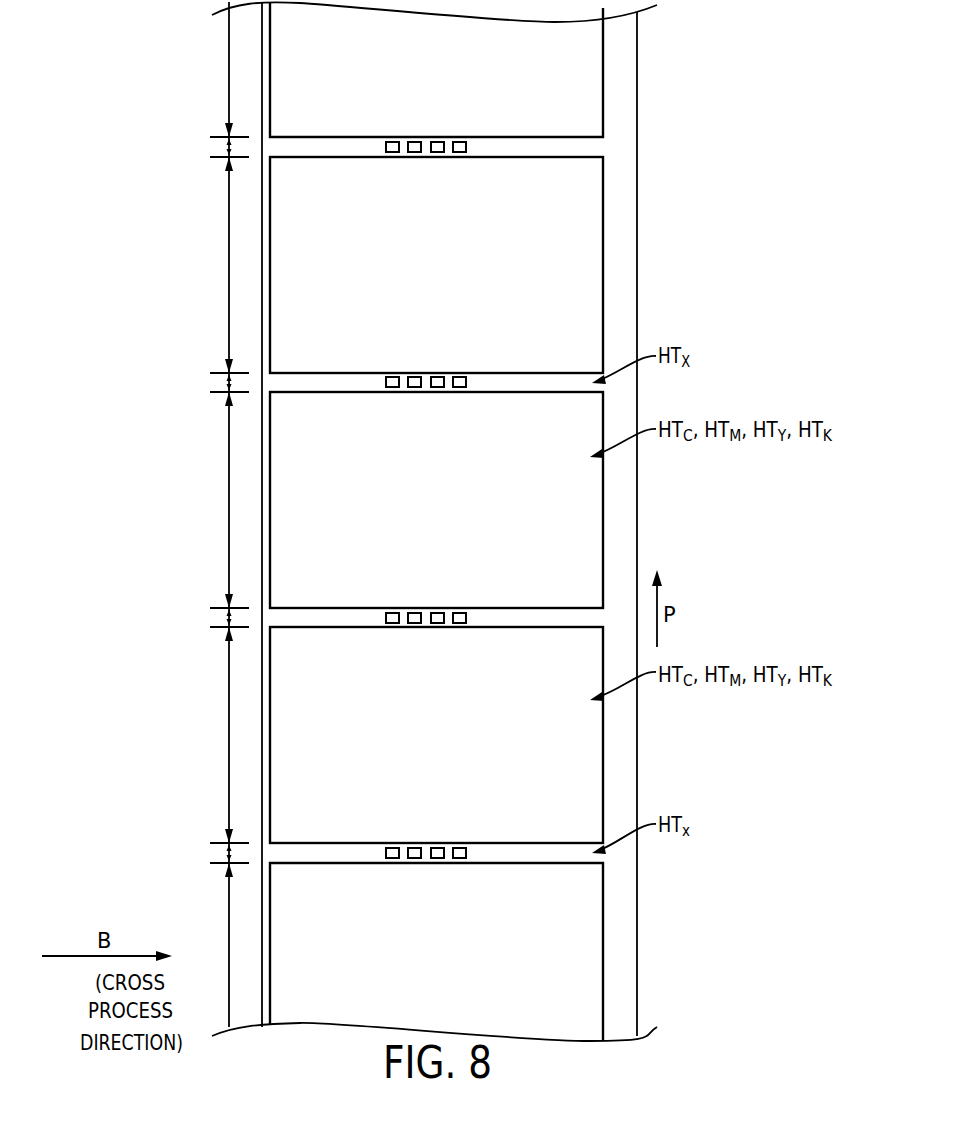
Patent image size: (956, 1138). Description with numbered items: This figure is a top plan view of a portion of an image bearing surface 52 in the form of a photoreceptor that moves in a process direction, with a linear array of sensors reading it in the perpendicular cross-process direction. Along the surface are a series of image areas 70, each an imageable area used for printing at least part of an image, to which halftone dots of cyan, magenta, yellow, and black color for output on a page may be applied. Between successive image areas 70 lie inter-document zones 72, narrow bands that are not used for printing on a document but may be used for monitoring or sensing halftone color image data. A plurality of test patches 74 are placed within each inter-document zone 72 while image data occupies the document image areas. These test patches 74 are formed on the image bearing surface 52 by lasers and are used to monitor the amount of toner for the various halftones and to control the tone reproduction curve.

The image bearing surface 52 is at (637, 159).
The image area 70 is at (229, 70).
The inter-document zone 72 is at (206, 147).
The test patches 74 is at (372, 146).